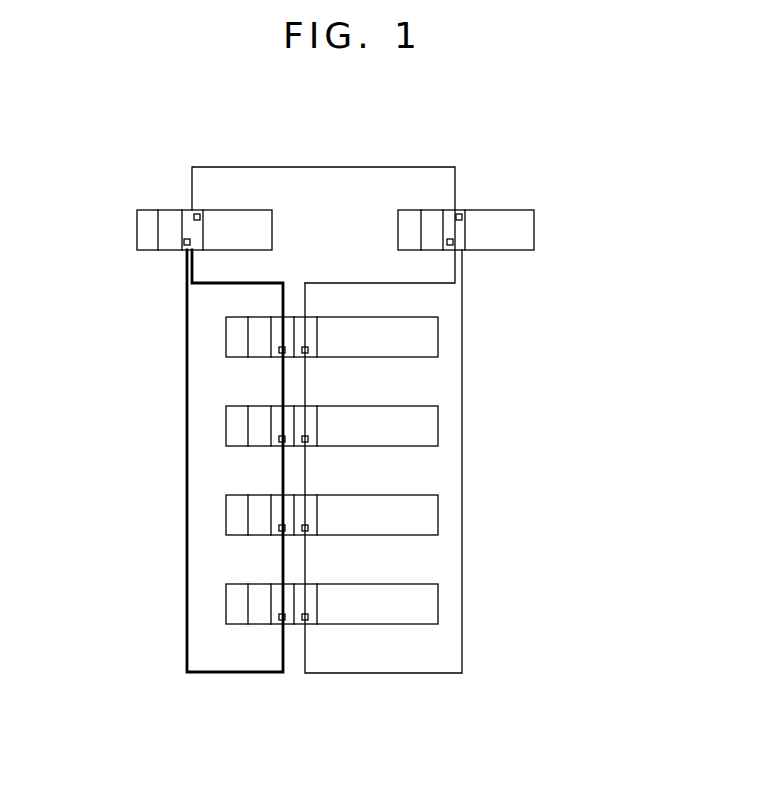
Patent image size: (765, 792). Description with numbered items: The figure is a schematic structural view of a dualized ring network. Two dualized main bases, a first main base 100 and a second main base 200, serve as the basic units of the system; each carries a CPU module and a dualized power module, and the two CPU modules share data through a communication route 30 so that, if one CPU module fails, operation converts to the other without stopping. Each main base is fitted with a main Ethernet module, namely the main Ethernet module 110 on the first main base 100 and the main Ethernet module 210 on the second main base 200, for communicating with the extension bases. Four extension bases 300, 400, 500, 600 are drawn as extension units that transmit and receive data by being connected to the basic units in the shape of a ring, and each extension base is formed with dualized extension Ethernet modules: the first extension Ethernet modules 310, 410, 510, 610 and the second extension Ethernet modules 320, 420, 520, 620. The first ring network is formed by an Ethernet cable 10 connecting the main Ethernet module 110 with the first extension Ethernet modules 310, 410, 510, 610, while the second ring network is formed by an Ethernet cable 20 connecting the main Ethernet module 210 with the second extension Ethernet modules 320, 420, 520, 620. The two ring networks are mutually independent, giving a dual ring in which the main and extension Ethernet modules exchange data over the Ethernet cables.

The Ethernet cable 10 is at (238, 672).
The Ethernet cable 20 is at (387, 673).
The communication route 30 is at (327, 167).
The first main base 100 is at (137, 230).
The main Ethernet module 110 is at (192, 210).
The second main base 200 is at (534, 230).
The main Ethernet module 210 is at (460, 210).
The extension base 300 is at (438, 335).
The first extension Ethernet module 310 is at (282, 334).
The second extension Ethernet module 320 is at (307, 334).
The extension base 400 is at (438, 424).
The first extension Ethernet module 410 is at (282, 423).
The second extension Ethernet module 420 is at (307, 423).
The extension base 500 is at (438, 513).
The first extension Ethernet module 510 is at (282, 512).
The second extension Ethernet module 520 is at (307, 512).
The extension base 600 is at (438, 602).
The first extension Ethernet module 610 is at (282, 601).
The second extension Ethernet module 620 is at (307, 601).